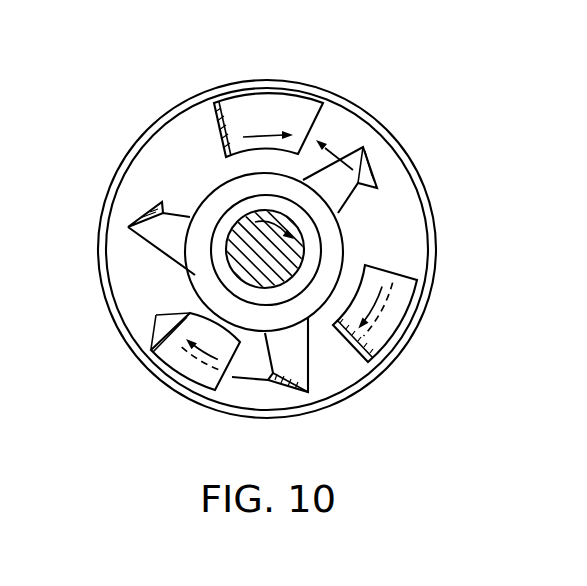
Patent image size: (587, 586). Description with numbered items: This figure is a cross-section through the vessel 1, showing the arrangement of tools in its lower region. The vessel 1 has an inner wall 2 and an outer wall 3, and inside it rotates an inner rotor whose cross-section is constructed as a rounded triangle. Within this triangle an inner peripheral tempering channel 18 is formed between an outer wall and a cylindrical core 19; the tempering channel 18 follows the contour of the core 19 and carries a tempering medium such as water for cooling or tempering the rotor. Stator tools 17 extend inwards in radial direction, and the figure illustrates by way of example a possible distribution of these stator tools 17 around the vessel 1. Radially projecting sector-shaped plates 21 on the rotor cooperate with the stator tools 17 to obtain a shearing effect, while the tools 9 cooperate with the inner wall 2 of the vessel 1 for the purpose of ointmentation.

The vessel 1 is at (123, 127).
The inner wall 2 is at (165, 123).
The housing outer wall 3 is at (108, 186).
The tools 9 is at (378, 170).
The stator tools 17 is at (248, 112).
The tempering channel 18 is at (312, 240).
The cylindrical core 19 is at (237, 267).
The sector-shaped plates 21 is at (243, 363).